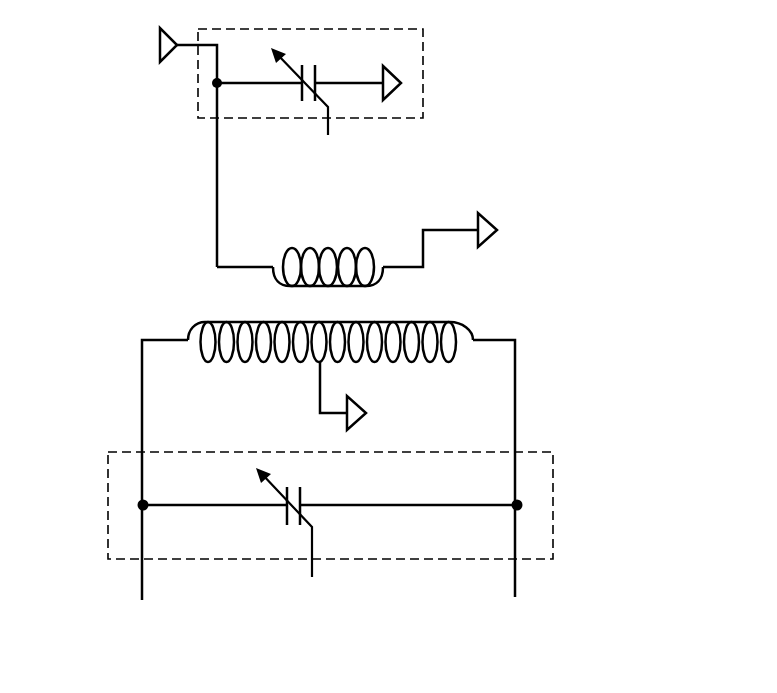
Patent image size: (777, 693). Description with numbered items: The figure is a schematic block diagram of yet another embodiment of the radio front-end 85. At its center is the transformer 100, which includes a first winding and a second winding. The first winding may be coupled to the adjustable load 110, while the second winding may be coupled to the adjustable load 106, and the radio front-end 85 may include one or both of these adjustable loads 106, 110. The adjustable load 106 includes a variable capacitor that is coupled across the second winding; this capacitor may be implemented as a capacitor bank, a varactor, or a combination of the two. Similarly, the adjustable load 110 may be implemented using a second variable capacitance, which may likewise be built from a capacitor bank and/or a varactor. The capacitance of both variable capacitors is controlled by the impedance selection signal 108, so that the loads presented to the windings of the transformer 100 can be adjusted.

The radio front-end 85 is at (373, 349).
The transformer 100 is at (364, 406).
The adjustable load 106 is at (98, 468).
The impedance selection signal 108 is at (323, 359).
The adjustable load 110 is at (434, 46).